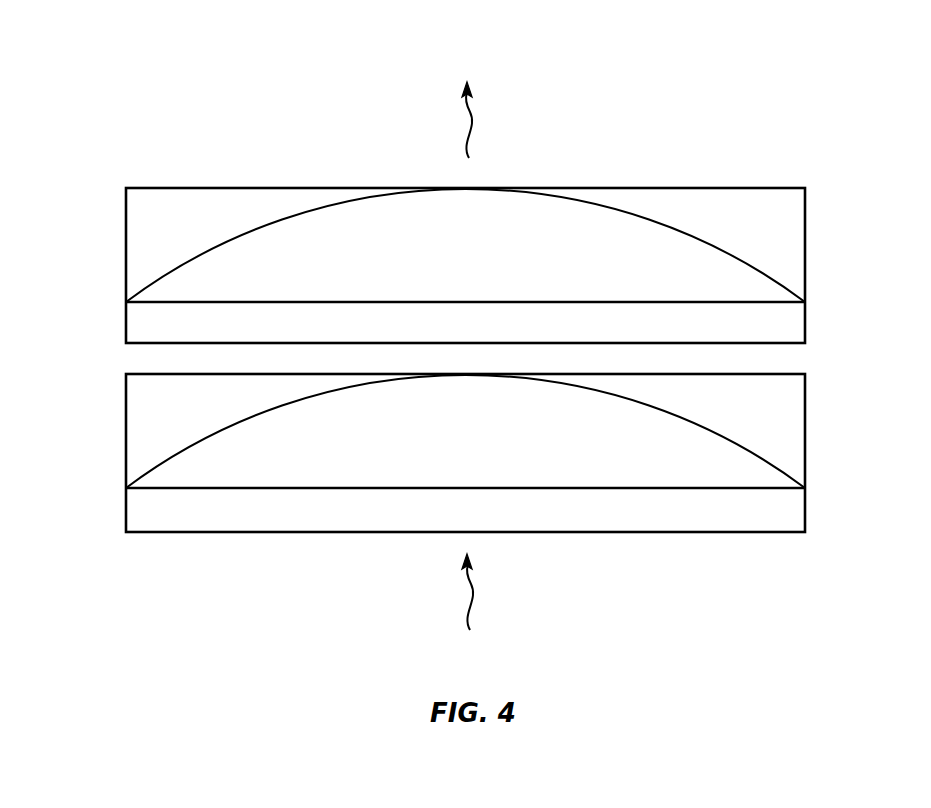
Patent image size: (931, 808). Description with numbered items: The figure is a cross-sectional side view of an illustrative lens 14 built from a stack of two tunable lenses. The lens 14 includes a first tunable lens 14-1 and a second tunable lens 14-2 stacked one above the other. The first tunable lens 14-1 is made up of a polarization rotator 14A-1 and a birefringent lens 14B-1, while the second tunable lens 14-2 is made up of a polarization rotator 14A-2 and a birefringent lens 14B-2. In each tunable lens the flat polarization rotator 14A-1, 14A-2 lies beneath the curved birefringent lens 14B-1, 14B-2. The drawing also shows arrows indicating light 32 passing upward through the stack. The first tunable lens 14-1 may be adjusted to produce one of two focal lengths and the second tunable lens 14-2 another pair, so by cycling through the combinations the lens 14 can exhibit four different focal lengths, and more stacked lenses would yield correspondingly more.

The lens 14 is at (770, 98).
The first tunable lens 14-1 is at (837, 374).
The second tunable lens 14-2 is at (837, 188).
The polarization rotator 14A-1 is at (133, 510).
The polarization rotator 14A-2 is at (133, 322).
The birefringent lens 14B-1 is at (111, 374).
The birefringent lens 14B-2 is at (111, 188).
The light 32 is at (475, 588).